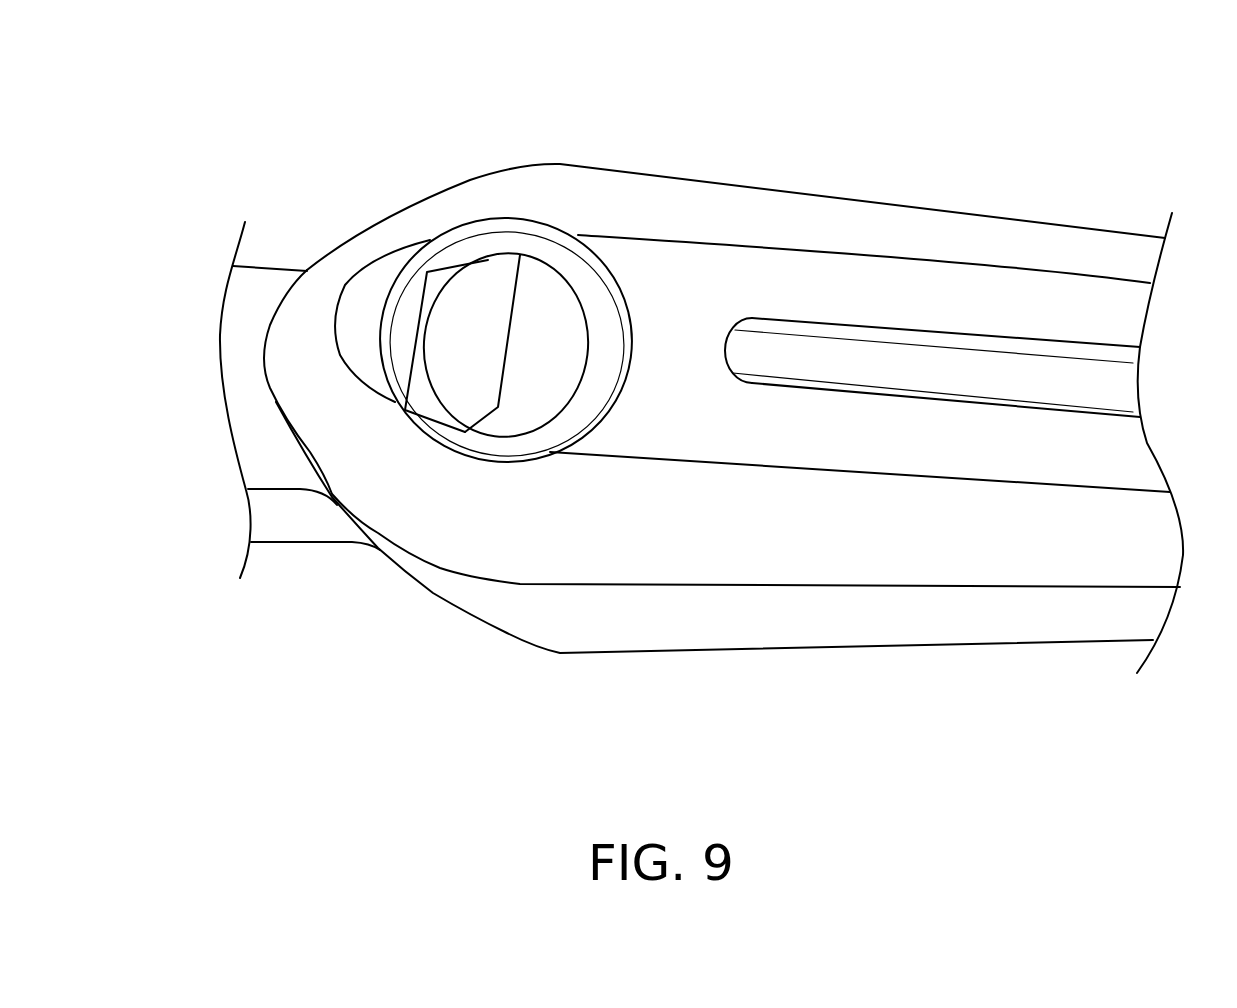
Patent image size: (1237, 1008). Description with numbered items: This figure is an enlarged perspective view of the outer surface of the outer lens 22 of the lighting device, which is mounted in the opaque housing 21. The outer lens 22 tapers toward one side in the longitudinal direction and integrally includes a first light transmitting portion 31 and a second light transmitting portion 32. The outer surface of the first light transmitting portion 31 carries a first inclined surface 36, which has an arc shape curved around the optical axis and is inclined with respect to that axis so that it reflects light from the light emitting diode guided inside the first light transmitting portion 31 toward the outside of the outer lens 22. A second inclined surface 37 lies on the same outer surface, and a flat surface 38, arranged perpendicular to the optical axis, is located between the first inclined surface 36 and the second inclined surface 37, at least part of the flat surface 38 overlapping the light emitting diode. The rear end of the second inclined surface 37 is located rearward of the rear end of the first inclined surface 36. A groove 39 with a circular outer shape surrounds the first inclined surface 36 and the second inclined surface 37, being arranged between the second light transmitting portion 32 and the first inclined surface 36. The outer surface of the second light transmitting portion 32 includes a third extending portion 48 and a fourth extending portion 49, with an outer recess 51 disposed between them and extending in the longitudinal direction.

The housing 21 is at (300, 572).
The outer lens 22 is at (993, 178).
The first light transmitting portion 31 is at (490, 285).
The second light transmitting portion 32 is at (820, 283).
The first inclined surface 36 is at (587, 367).
The second inclined surface 37 is at (462, 342).
The flat surface 38 is at (552, 305).
The groove 39 is at (608, 287).
The third extending portion 48 is at (932, 438).
The fourth extending portion 49 is at (949, 297).
The outer recess 51 is at (1067, 380).